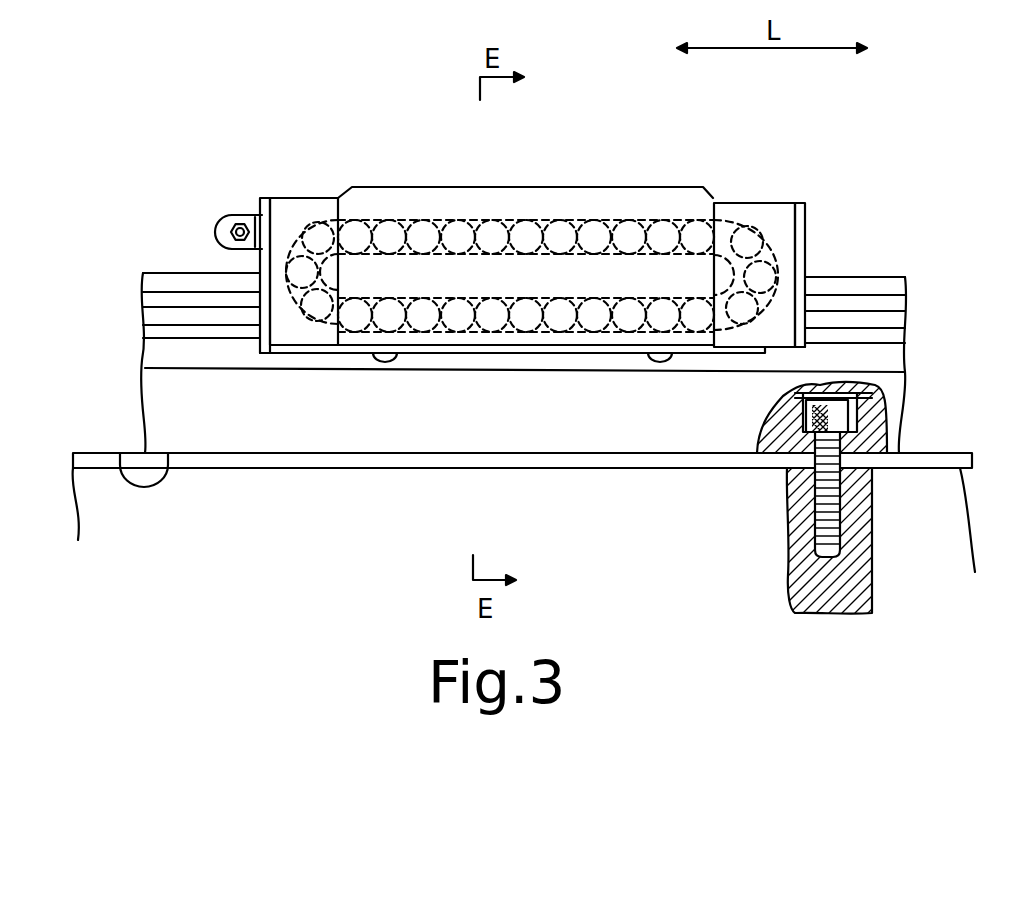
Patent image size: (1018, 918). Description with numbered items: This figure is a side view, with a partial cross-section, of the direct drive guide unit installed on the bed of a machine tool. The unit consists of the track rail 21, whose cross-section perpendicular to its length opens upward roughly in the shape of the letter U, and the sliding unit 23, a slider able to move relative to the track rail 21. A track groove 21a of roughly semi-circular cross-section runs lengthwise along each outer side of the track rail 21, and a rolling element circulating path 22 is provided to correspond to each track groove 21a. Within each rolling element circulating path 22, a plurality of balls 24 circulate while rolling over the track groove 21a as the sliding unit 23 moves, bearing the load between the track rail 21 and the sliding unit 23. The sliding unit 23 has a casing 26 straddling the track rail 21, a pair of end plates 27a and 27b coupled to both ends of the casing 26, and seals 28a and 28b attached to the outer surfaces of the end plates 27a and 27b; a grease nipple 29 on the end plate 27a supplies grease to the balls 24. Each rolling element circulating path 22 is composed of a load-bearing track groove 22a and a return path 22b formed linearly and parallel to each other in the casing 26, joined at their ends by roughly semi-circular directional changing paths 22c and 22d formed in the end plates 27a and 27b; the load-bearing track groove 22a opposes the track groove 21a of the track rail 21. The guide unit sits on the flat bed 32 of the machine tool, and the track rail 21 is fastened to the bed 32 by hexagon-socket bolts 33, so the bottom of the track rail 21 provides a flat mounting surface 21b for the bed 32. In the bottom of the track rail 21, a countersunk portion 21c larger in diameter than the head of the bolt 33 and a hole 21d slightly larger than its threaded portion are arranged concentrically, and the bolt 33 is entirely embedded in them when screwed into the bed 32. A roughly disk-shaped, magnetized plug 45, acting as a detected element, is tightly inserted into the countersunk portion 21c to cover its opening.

The track rail 21 is at (509, 386).
The track groove 21a is at (160, 318).
The flat mounting surface 21b is at (122, 450).
The countersunk portion 21c is at (875, 460).
The hole 21d is at (793, 445).
The rolling element circulating path 22 is at (514, 339).
The load-bearing track groove 22a is at (512, 335).
The return path 22b is at (594, 228).
The directional changing path 22c is at (262, 257).
The directional changing path 22d is at (790, 243).
The sliding unit 23 is at (514, 324).
The balls 24 is at (390, 220).
The casing 26 is at (556, 188).
The end plate 27a is at (312, 210).
The end plate 27b is at (762, 205).
The seal 28a is at (263, 196).
The seal 28b is at (802, 205).
The grease nipple 29 is at (238, 212).
The bed 32 is at (950, 490).
The bolt 33 is at (787, 520).
The plug 45 is at (885, 400).